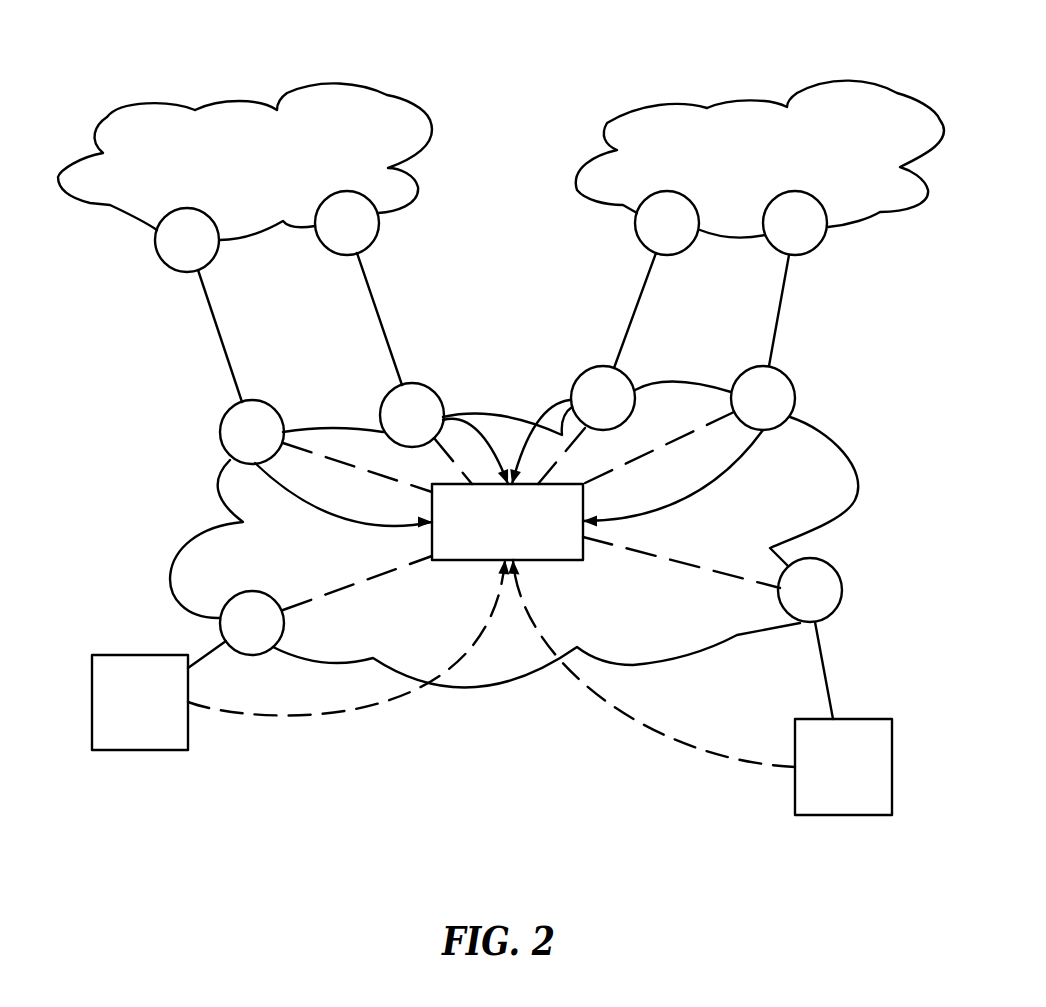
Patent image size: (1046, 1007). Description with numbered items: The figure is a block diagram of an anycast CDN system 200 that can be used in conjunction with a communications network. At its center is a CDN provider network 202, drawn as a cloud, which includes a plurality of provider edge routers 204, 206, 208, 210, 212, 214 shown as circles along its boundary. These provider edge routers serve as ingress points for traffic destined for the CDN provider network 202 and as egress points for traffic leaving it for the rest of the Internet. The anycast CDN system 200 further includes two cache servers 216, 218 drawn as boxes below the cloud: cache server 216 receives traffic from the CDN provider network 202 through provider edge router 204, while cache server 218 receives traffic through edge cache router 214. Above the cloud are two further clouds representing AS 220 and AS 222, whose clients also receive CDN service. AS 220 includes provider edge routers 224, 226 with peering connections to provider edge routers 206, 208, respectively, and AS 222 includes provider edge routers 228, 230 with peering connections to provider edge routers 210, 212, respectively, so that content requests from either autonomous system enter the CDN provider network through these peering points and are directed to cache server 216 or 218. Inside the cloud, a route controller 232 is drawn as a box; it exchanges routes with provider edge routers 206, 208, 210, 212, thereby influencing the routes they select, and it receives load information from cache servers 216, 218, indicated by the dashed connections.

The anycast CDN system 200 is at (500, 80).
The CDN provider network 202 is at (192, 532).
The provider edge router 204 is at (254, 656).
The provider edge router 206 is at (219, 428).
The provider edge router 208 is at (378, 413).
The provider edge router 210 is at (604, 367).
The provider edge router 212 is at (765, 367).
The provider edge router 214 is at (840, 584).
The cache server 216 is at (140, 655).
The cache server 218 is at (843, 815).
The AS 220 is at (247, 98).
The AS 222 is at (758, 97).
The provider edge router 224 is at (156, 242).
The provider edge router 226 is at (377, 224).
The provider edge router 228 is at (636, 226).
The provider edge router 230 is at (827, 227).
The route controller 232 is at (540, 560).